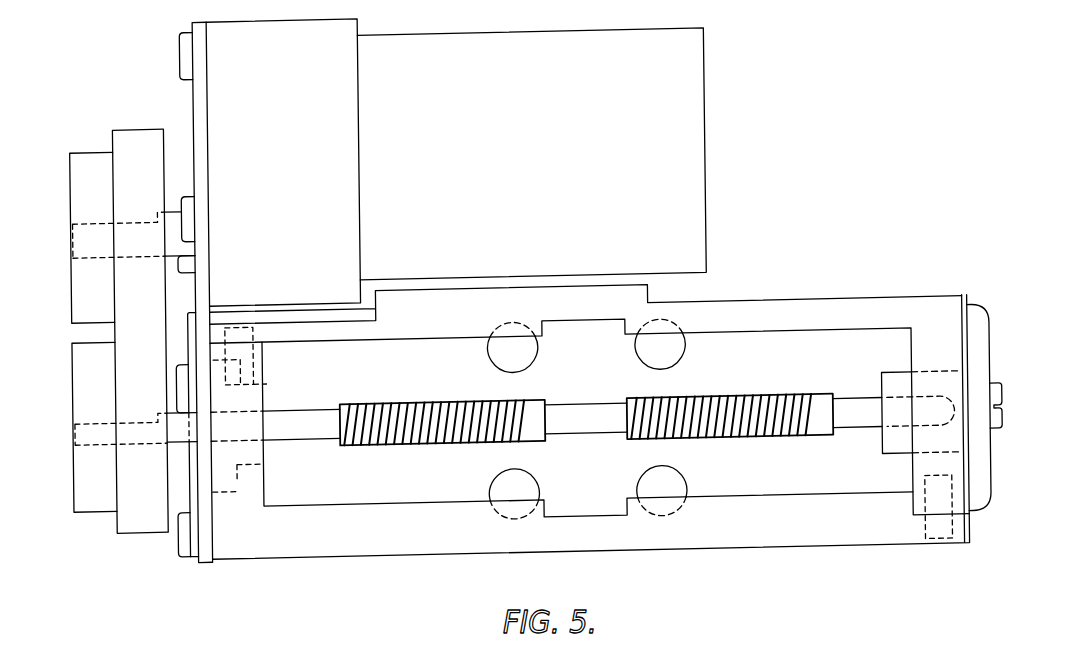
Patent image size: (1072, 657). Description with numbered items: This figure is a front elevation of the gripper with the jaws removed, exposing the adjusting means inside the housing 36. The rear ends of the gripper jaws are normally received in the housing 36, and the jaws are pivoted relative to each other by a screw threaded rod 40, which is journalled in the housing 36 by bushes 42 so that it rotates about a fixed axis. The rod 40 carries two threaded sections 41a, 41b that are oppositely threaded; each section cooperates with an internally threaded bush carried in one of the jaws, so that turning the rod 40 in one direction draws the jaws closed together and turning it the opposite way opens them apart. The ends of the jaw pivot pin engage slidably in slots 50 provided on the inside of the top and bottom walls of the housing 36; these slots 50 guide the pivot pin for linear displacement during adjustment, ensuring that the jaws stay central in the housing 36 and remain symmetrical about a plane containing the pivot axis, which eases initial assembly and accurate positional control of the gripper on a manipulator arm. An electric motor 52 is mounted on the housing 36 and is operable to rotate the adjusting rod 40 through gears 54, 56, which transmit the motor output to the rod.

The housing 36 is at (798, 319).
The screw threaded rod 40 is at (309, 407).
The threaded section 41a is at (395, 439).
The threaded section 41b is at (762, 435).
The bushes 42 is at (236, 476).
The slots 50 is at (578, 329).
The electric motor 52 is at (691, 118).
The gear 54 is at (138, 131).
The gear 56 is at (141, 501).